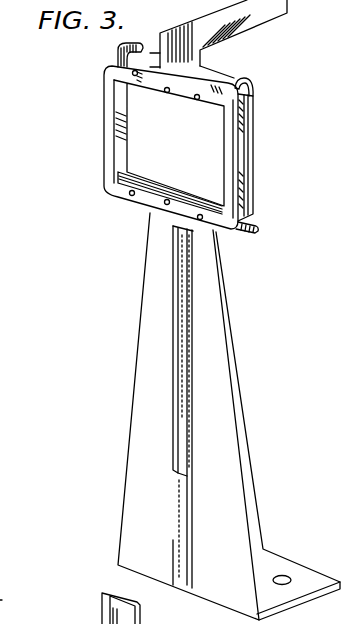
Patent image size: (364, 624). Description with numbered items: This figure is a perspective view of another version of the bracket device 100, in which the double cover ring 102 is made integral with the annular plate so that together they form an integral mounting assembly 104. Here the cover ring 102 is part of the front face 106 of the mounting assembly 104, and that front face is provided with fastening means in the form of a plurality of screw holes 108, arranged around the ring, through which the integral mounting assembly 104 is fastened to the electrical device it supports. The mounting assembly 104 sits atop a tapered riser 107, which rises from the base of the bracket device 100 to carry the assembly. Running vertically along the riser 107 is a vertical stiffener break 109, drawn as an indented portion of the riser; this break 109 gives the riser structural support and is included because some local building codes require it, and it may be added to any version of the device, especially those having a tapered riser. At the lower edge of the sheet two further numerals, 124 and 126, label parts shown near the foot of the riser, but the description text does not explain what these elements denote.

The device 100 is at (142, 230).
The cover ring 102 is at (103, 138).
The integral mounting assembly 104 is at (263, 137).
The front face 106 is at (251, 100).
The riser 107 is at (150, 372).
The screw holes 108 is at (195, 98).
The vertical stiffener break 109 is at (180, 336).
The base member 124 is at (16, 611).
The block 126 is at (88, 620).